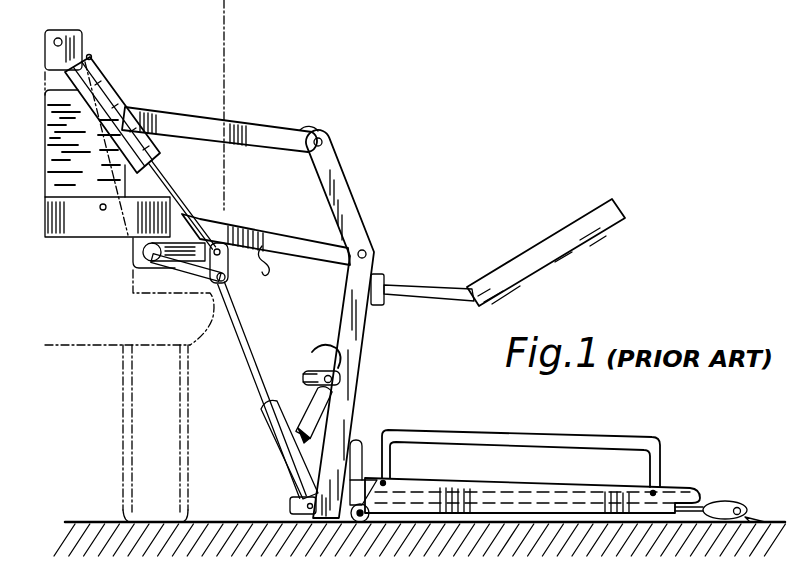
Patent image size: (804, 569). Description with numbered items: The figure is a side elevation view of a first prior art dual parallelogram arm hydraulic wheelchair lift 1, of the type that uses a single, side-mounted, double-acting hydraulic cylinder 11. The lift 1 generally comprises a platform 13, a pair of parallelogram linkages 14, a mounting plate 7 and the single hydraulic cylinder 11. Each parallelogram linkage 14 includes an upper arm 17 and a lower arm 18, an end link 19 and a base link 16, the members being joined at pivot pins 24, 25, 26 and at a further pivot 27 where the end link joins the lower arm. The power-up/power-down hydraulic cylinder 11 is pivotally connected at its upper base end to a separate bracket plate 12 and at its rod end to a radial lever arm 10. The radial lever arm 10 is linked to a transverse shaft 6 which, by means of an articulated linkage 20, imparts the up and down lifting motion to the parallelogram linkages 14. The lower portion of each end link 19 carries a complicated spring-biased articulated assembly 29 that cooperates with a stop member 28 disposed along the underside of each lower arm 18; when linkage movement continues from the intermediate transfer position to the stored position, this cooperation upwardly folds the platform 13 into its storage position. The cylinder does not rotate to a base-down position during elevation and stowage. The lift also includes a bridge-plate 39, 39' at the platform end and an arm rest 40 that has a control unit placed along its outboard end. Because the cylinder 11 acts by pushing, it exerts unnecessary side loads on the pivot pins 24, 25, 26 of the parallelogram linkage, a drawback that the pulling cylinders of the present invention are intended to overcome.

The lift 1 is at (152, 106).
The transverse shaft 6 is at (142, 262).
The mounting plate 7 is at (45, 215).
The radial lever arm 10 is at (180, 280).
The hydraulic cylinder 11 is at (108, 92).
The bracket plate 12 is at (78, 42).
The platform 13 is at (670, 483).
The parallelogram linkage 14 is at (307, 131).
The base link 16 is at (50, 155).
The arm 17 is at (203, 119).
The lower arm 18 is at (258, 220).
The end link 19 is at (350, 185).
The articulated linkage 20 is at (197, 230).
The pin 24 is at (103, 210).
The pin 25 is at (327, 137).
The pivot pin 26 is at (47, 103).
The lower pivot 27 is at (374, 250).
The stop member 28 is at (276, 267).
The spring-biased articulated assembly 29 is at (322, 350).
The bridge-plate 39 is at (257, 390).
The bridge-plate 39' is at (278, 496).
The arm rest 40 is at (545, 249).